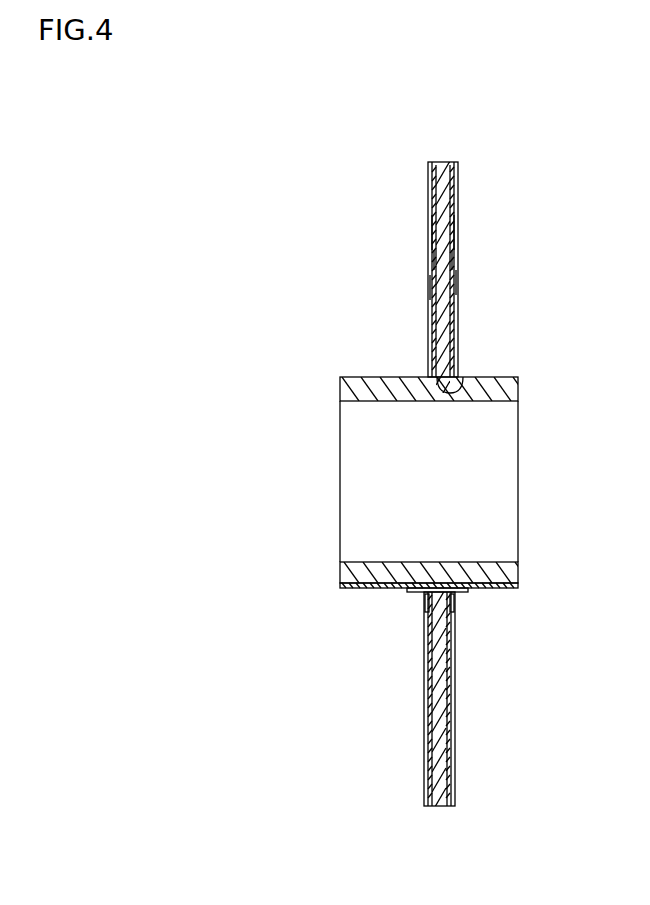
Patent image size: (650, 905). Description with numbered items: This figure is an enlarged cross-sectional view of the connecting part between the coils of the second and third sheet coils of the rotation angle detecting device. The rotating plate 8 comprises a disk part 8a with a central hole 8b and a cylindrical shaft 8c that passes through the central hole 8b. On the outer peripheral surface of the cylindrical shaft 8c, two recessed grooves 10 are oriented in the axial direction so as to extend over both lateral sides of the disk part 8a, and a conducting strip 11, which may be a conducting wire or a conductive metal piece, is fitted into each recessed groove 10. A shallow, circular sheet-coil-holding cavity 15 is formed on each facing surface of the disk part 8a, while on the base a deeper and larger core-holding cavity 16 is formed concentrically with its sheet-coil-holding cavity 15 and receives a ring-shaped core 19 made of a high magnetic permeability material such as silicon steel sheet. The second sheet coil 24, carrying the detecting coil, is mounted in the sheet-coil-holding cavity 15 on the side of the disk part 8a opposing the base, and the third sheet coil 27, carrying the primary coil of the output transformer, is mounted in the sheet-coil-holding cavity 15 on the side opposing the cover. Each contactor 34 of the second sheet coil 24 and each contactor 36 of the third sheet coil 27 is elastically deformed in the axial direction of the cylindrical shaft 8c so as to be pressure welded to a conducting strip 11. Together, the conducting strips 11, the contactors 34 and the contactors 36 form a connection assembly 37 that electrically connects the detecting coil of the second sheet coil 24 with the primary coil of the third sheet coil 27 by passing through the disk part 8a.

The rotating plate 8 is at (444, 160).
The disk part 8a is at (449, 161).
The central hole 8b is at (463, 383).
The cylindrical shaft 8c is at (494, 377).
The recessed groove 10 is at (378, 588).
The conducting strip 11 is at (390, 589).
The sheet-coil-holding cavity 15 is at (432, 191).
The core-holding cavity 16 is at (431, 288).
The ring-shaped core 19 is at (433, 259).
The second sheet coil 24 is at (428, 231).
The third sheet coil 27 is at (458, 233).
The contactor 34 is at (422, 604).
The contactor 36 is at (458, 605).
The connection assembly 37 is at (469, 593).